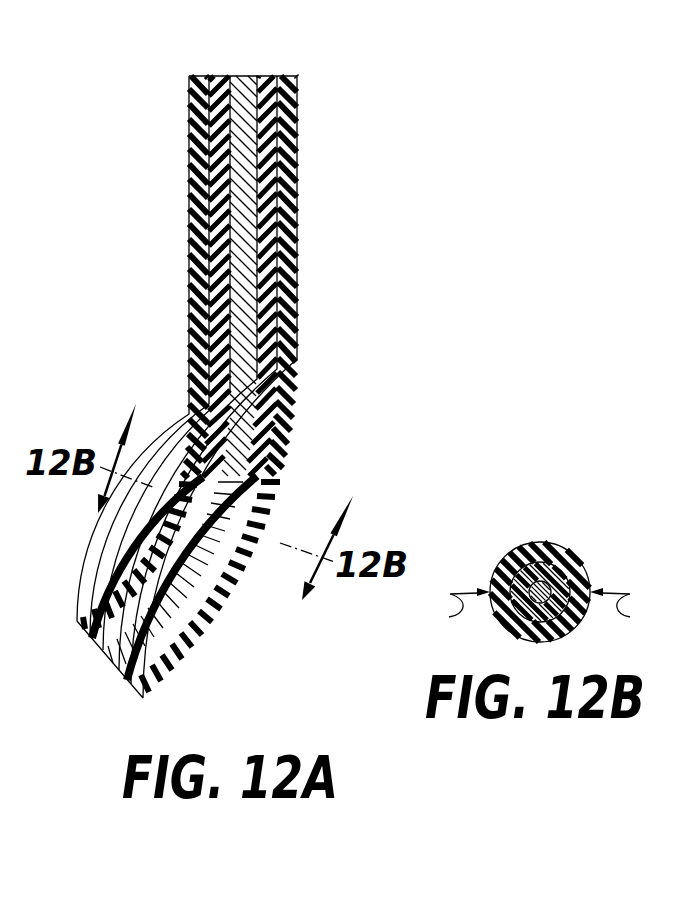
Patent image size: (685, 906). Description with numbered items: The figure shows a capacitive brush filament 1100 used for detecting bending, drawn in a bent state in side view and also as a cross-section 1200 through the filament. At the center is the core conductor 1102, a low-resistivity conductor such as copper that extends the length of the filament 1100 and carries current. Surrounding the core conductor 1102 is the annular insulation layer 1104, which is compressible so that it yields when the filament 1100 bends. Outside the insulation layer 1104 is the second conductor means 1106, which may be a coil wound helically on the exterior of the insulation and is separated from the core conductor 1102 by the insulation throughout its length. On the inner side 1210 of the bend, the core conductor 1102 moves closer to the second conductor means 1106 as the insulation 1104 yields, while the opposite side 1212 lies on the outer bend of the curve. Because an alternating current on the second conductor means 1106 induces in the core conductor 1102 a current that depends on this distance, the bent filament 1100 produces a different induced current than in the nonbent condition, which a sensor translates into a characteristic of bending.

In FIG. 12A, the capacitive brush filament 1100 is at (334, 134).
In FIG. 12A, the core conductor 1102 is at (242, 78).
In FIG. 12B, the core conductor 1102 is at (530, 568).
In FIG. 12A, the insulation layer 1104 is at (266, 78).
In FIG. 12B, the insulation layer 1104 is at (563, 574).
In FIG. 12A, the second conductor means 1106 is at (330, 80).
In FIG. 12B, the second conductor means 1106 is at (540, 543).
In FIG. 12B, the tube cross-section 1200 is at (580, 516).
In FIG. 12B, the inner side of the bend 1210 is at (447, 610).
In FIG. 12B, the second lateral direction 1212 is at (633, 610).